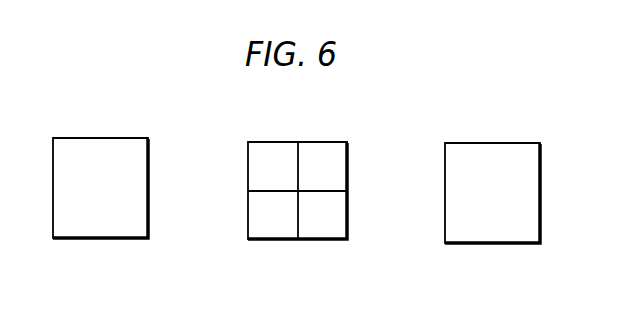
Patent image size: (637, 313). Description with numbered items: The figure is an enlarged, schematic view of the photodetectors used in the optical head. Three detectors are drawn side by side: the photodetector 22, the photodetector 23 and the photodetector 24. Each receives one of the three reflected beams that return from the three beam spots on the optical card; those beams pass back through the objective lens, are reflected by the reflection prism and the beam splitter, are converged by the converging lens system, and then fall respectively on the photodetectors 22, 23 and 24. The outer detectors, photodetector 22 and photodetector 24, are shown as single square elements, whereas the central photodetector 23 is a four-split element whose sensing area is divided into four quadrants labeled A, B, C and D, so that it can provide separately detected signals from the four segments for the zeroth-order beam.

The photodetector 22 is at (131, 238).
The photodetector 23 is at (312, 239).
The photodetector 24 is at (493, 243).